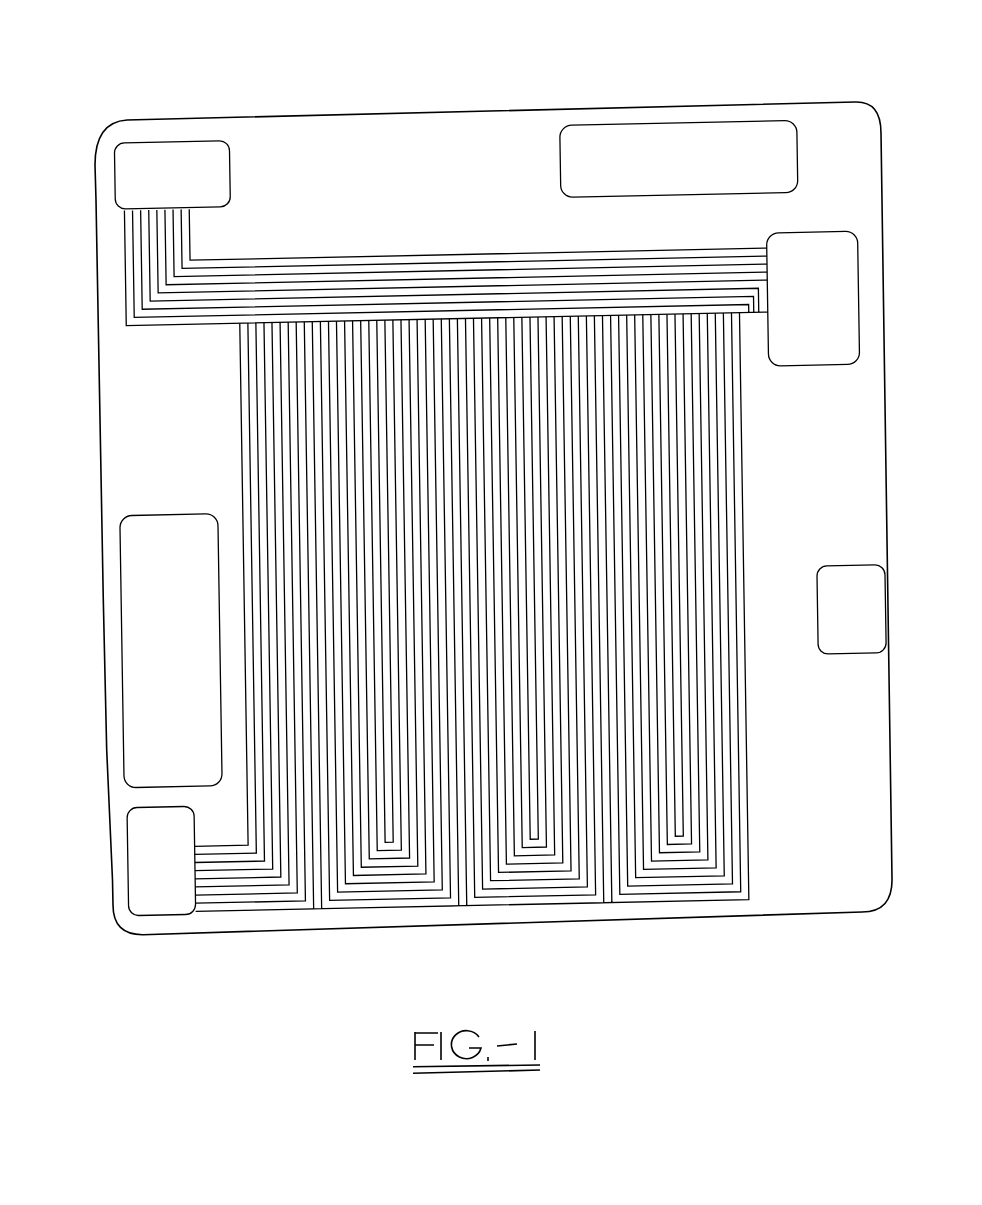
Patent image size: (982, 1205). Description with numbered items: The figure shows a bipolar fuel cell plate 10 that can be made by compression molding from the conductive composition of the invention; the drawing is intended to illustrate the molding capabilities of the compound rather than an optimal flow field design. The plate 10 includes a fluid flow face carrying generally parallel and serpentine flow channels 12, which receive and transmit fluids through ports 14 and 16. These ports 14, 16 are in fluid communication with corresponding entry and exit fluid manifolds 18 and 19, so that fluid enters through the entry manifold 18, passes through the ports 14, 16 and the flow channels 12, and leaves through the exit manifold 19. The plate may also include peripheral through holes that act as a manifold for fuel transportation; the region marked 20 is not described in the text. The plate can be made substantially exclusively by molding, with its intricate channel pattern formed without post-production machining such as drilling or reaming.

The plate 10 is at (437, 88).
The flow channels 12 is at (232, 413).
The port 14 is at (690, 130).
The port 16 is at (855, 600).
The entry fluid manifold 18 is at (143, 848).
The exit fluid manifold 19 is at (172, 148).
The seal area 20 is at (162, 673).